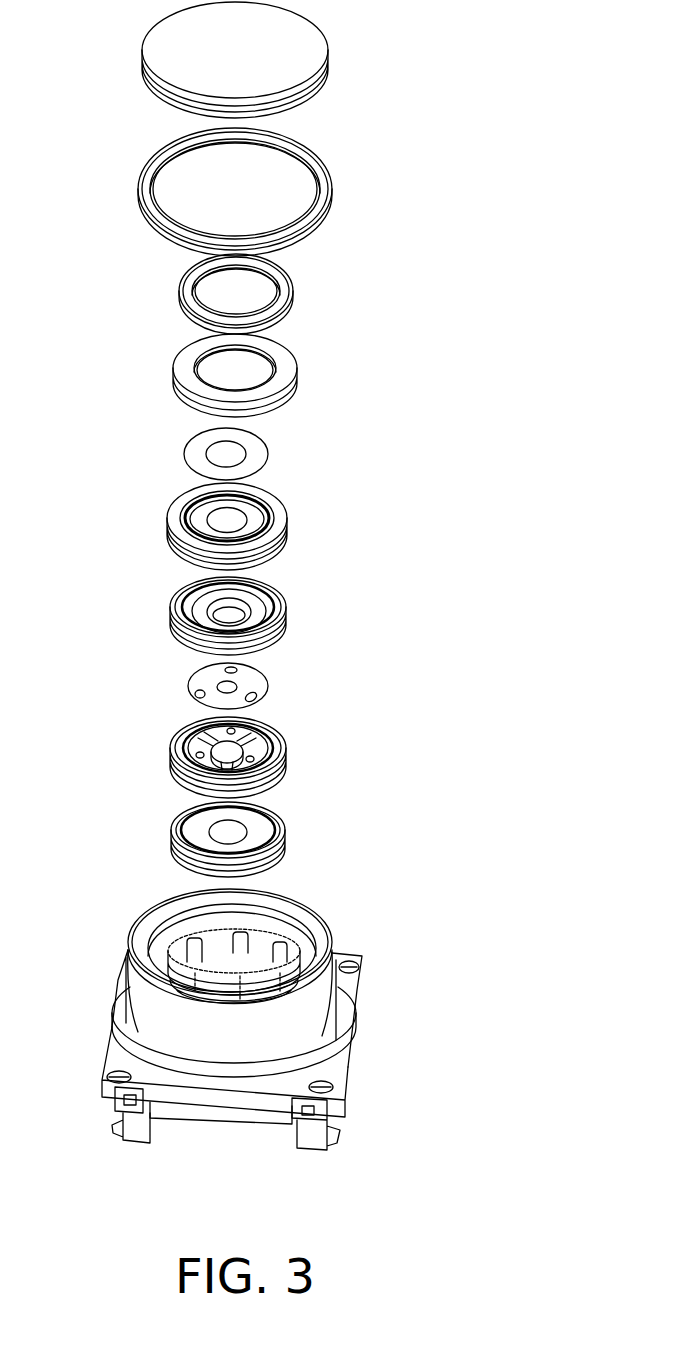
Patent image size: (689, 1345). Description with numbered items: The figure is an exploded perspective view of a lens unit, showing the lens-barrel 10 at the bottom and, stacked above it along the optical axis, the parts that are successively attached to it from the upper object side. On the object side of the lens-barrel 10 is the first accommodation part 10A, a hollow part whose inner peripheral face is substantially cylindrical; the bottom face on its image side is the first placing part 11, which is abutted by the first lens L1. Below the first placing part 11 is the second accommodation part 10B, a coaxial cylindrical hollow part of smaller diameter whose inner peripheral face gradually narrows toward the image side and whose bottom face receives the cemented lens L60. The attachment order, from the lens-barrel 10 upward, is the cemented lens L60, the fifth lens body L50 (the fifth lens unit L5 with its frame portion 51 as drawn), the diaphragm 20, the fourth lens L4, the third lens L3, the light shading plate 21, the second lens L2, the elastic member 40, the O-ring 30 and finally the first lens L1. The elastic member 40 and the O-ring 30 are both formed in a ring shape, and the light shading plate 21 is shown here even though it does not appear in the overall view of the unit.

The first lens L1 is at (324, 30).
The O-ring 30 is at (244, 146).
The elastic member 40 is at (231, 269).
The second lens L2 is at (298, 357).
The light shading plate 21 is at (269, 448).
The third lens L3 is at (286, 500).
The fourth lens L4 is at (291, 605).
The diaphragm 20 is at (264, 672).
The fifth lens unit L5 is at (242, 750).
The fifth lens body L50 is at (283, 733).
The lens frame portion 51 is at (286, 756).
The cemented lens L60 is at (281, 818).
The lens-barrel 10 is at (245, 1007).
The first accommodation part 10A is at (164, 946).
The second accommodation part 10B is at (274, 943).
The first placing part 11 is at (196, 937).